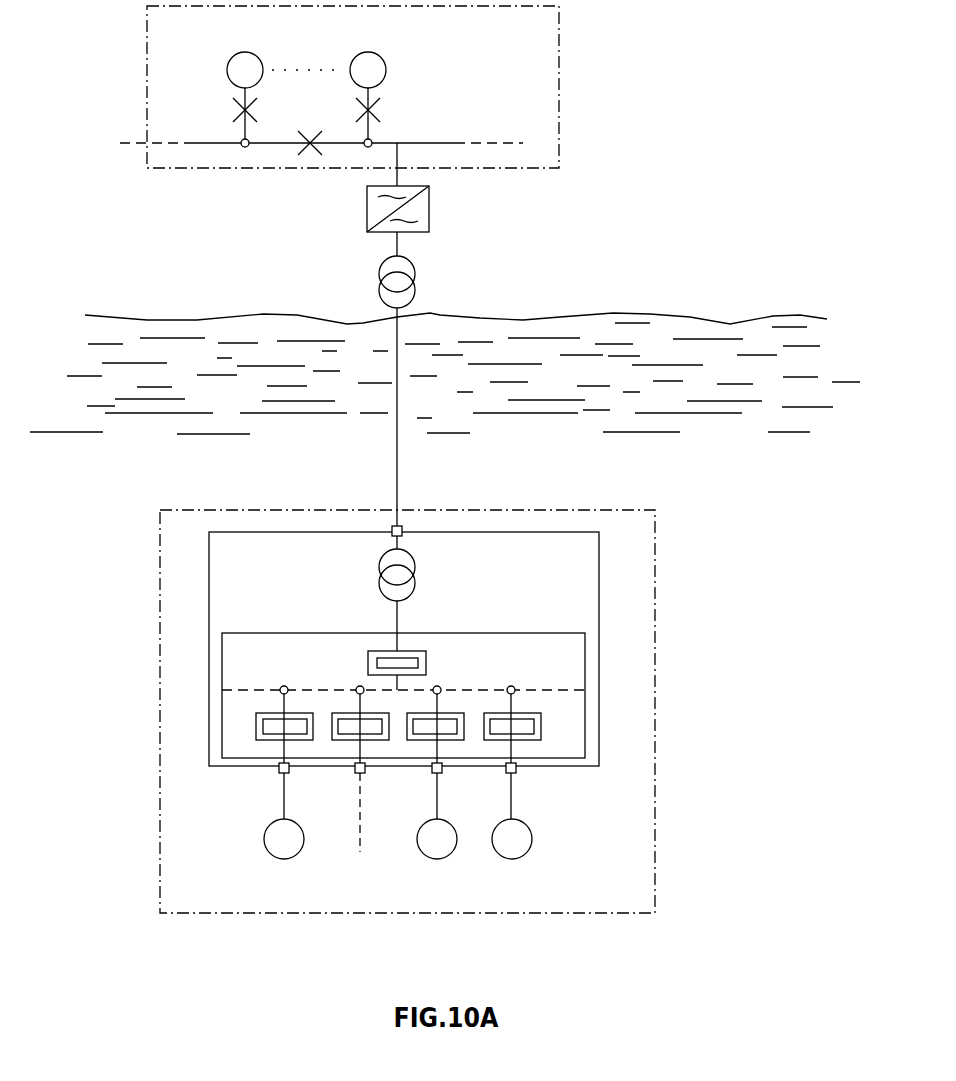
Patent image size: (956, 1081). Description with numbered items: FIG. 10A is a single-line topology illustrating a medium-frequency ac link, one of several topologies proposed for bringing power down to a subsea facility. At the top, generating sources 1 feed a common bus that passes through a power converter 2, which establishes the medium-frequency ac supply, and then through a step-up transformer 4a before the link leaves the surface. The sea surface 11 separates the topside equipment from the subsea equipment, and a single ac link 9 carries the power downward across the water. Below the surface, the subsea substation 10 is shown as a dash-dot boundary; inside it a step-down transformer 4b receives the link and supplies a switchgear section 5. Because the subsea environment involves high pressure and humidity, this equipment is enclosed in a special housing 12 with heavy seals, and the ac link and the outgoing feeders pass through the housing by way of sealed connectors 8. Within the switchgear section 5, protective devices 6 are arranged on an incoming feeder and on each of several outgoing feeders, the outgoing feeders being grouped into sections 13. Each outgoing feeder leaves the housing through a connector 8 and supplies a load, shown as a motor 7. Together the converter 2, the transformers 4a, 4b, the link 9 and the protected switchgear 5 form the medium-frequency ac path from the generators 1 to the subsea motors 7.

The generator 1 is at (230, 64).
The power converter 2 is at (367, 202).
The topside transformer 4a is at (415, 283).
The subsea transformer 4b is at (417, 572).
The switchgear 5 is at (585, 711).
The circuit breaker 6 is at (426, 663).
The motor 7 is at (266, 845).
The wet-mateable connector 8 is at (391, 532).
The power cable 9 is at (398, 389).
The subsea installation 10 is at (655, 795).
The sea surface 11 is at (687, 318).
The enclosure 12 is at (599, 622).
The switchgear compartment 13 is at (338, 713).